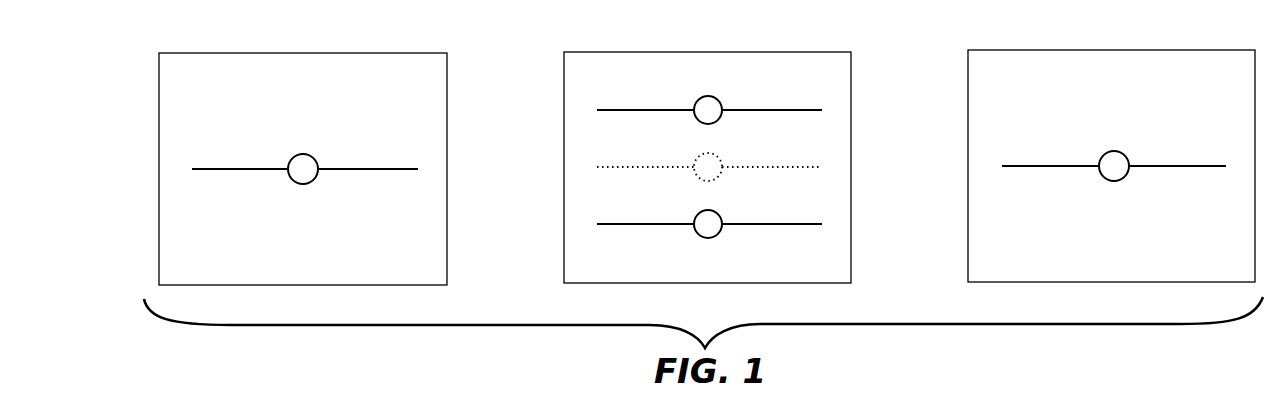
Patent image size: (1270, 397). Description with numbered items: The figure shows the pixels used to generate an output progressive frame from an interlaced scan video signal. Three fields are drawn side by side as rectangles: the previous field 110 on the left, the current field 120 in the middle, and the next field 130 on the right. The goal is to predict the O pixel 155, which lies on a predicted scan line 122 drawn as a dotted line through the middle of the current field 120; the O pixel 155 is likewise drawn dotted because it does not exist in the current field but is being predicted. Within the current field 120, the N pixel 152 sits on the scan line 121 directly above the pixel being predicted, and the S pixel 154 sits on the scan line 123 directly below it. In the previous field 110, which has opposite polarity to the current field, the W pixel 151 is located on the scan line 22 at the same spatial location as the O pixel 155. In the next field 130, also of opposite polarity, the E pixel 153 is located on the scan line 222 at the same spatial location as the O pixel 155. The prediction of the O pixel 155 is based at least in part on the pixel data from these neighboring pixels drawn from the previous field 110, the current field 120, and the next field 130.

The previous field 110 is at (235, 80).
The current field 120 is at (598, 65).
The next field 130 is at (1045, 77).
The scan line 22 is at (393, 167).
The scan line 121 is at (610, 108).
The predicted scan line 122 is at (607, 165).
The scan line 123 is at (615, 222).
The scan line 222 is at (1025, 163).
The W pixel 151 is at (310, 153).
The N pixel 152 is at (700, 96).
The predicted O pixel 155 is at (722, 155).
The S pixel 154 is at (695, 230).
The E pixel 153 is at (1122, 151).